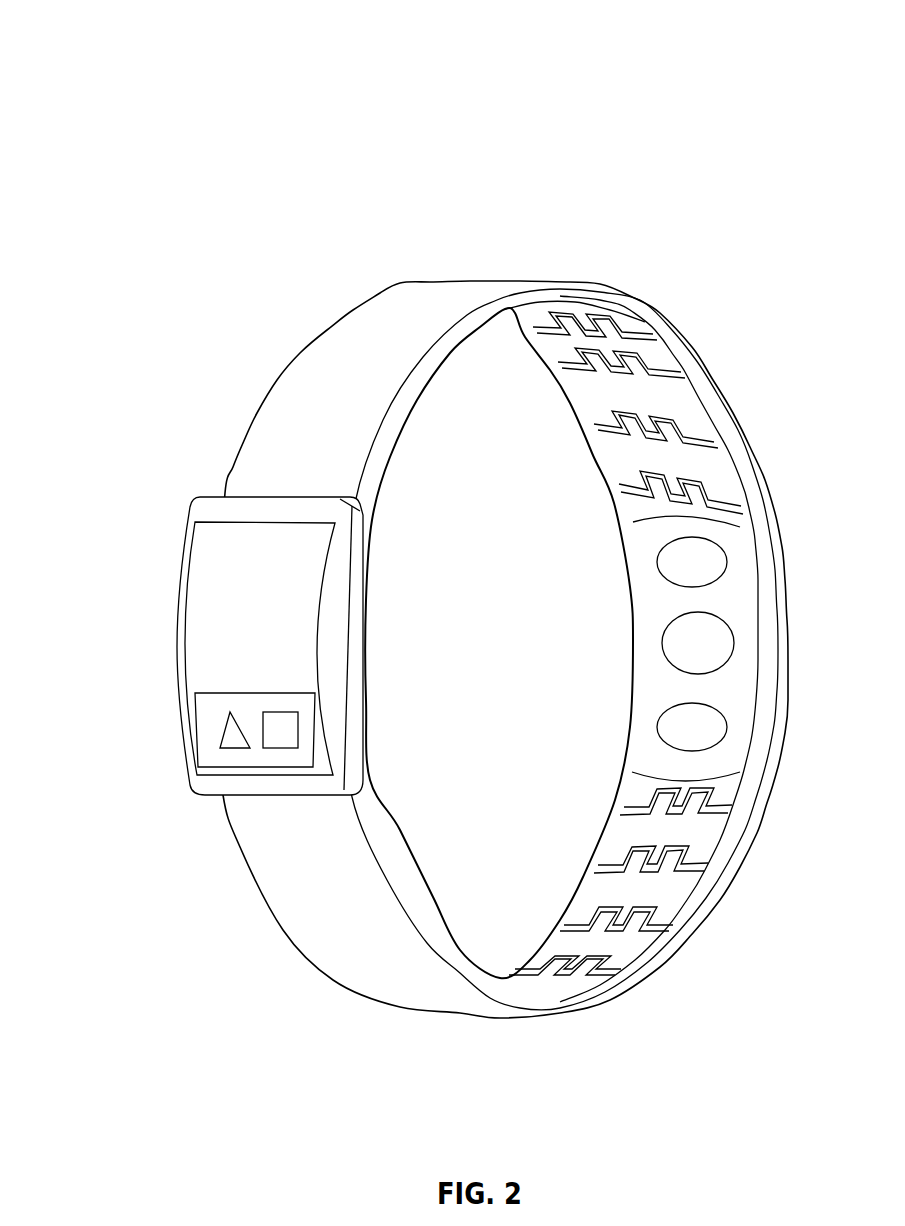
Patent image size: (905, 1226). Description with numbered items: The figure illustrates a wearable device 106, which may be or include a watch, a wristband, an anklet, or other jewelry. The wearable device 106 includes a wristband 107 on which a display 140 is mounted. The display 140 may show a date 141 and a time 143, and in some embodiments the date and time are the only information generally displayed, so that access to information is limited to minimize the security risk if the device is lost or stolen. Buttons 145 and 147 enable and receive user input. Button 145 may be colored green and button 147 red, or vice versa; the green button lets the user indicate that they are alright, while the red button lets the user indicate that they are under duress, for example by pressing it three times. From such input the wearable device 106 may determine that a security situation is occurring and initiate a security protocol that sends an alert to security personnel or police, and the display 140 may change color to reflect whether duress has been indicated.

The wearable device 106 is at (431, 512).
The wristband 107 is at (427, 303).
The display 140 is at (202, 600).
The date 141 is at (257, 540).
The time 143 is at (195, 657).
The button 145 is at (235, 743).
The button 147 is at (284, 737).